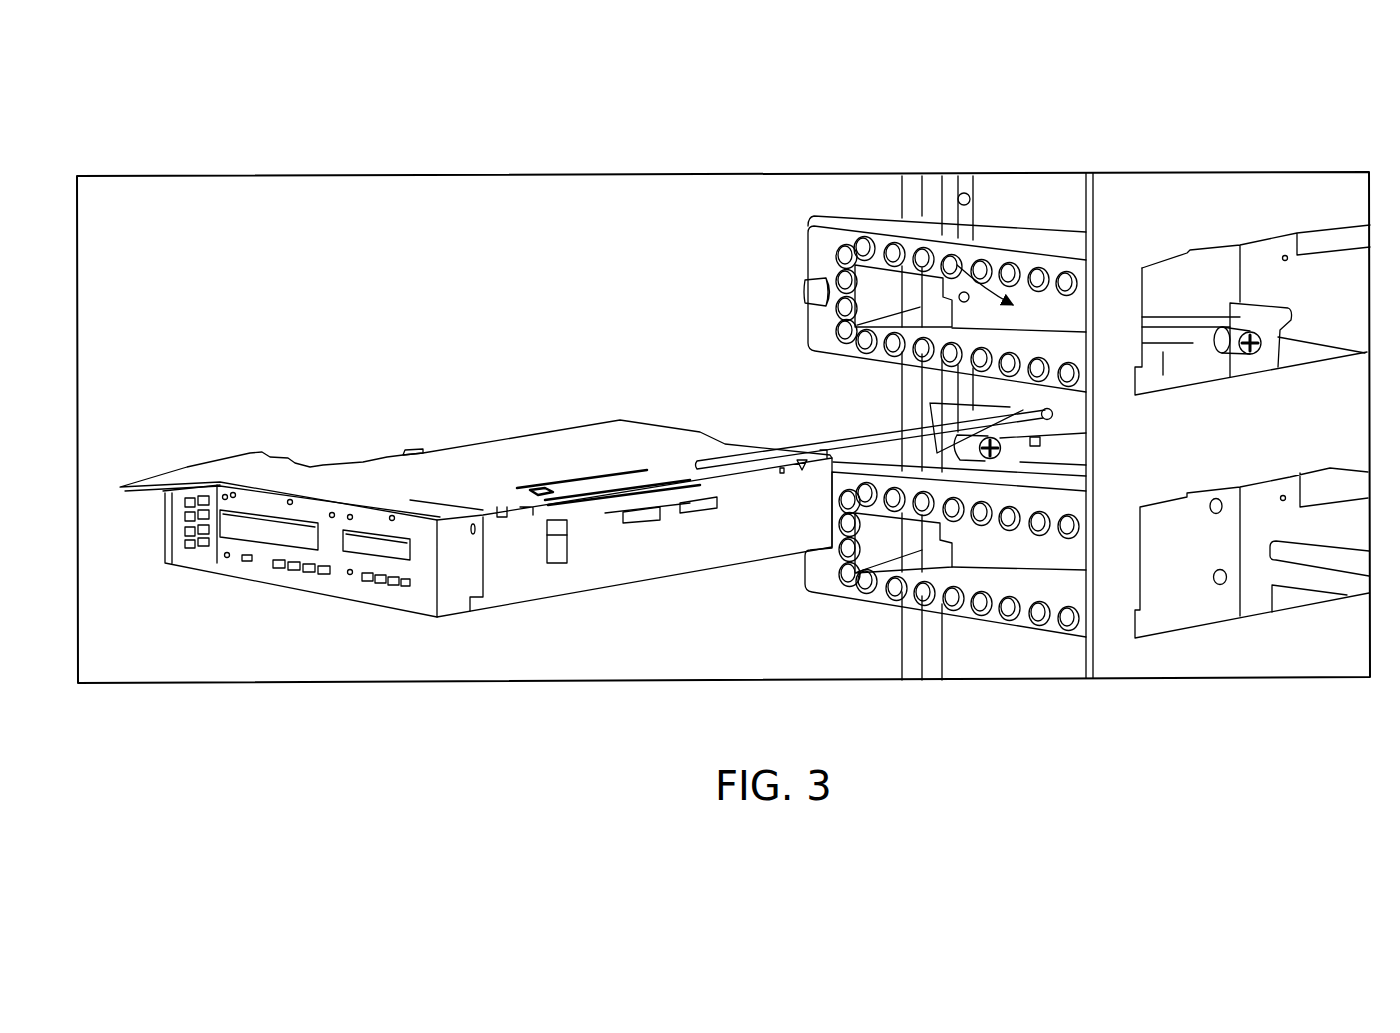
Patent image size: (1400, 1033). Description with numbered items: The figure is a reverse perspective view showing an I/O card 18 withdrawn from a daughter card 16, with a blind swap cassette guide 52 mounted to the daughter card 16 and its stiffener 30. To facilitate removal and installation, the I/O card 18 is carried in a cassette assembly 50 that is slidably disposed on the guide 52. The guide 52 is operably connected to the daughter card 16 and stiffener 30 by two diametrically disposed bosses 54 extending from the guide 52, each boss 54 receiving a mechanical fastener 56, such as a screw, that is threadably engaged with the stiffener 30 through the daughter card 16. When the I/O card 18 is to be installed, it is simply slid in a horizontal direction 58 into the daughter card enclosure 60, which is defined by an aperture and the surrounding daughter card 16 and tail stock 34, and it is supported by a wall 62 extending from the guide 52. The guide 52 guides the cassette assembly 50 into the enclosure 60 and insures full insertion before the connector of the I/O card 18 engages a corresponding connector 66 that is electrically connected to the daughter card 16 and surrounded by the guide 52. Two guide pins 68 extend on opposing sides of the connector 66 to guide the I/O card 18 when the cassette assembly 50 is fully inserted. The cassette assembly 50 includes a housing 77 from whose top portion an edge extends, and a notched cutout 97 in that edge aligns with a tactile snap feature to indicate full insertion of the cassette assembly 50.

The daughter card 16 is at (1020, 186).
The I/O card 18 is at (247, 545).
The stiffener 30 is at (921, 212).
The tail stock 34 is at (1118, 186).
The cassette assembly 50 is at (476, 473).
The blind swap cassette guide 52 is at (1225, 334).
The boss 54 is at (1245, 332).
The mechanical fastener 56 is at (1278, 308).
The horizontal direction 58 is at (722, 452).
The daughter card enclosure 60 is at (957, 265).
The wall 62 is at (1060, 461).
The connector 66 is at (1158, 360).
The guide pin 68 is at (1188, 378).
The housing 77 is at (571, 471).
The cutout 97 is at (405, 453).